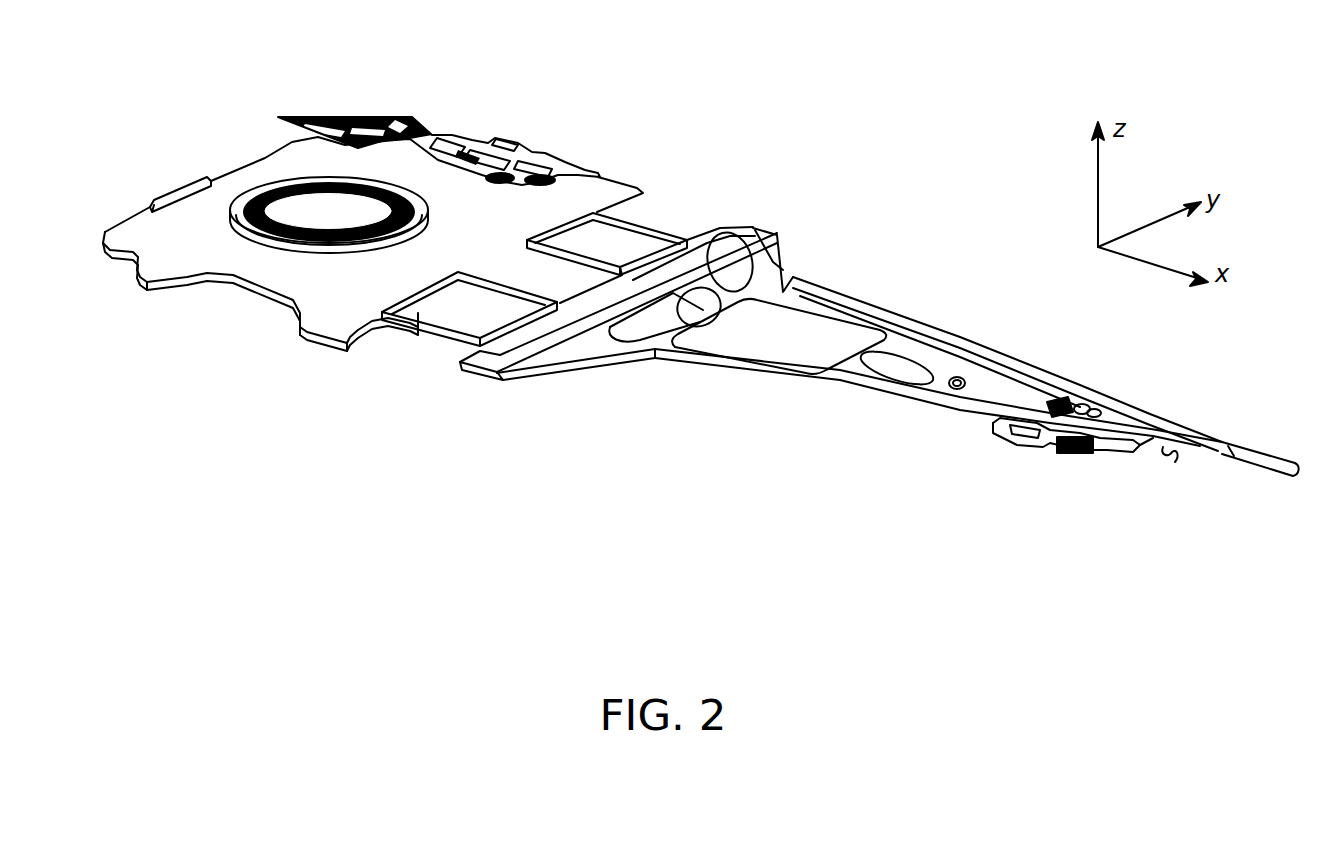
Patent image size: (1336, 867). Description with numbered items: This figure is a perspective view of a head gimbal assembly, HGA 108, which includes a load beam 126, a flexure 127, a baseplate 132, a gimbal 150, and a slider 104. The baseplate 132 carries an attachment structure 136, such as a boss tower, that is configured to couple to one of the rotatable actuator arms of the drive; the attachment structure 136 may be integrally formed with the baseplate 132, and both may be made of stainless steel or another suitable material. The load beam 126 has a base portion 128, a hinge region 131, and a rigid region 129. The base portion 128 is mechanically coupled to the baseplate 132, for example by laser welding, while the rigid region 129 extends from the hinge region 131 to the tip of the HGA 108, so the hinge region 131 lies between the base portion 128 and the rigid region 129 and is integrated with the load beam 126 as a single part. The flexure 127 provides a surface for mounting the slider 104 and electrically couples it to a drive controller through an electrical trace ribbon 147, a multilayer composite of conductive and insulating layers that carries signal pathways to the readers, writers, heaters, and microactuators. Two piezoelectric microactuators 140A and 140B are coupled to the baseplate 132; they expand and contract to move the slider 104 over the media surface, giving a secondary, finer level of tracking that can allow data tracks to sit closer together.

The slider 104 is at (1083, 450).
The HGA 108 is at (857, 148).
The load beam 126 is at (922, 305).
The flexure 127 is at (1043, 463).
The base portion 128 is at (593, 348).
The rigid region 129 is at (1008, 387).
The hinge region 131 is at (785, 285).
The baseplate 132 is at (610, 186).
The attachment structure 136 is at (266, 186).
The microactuator 140A is at (448, 315).
The microactuator 140B is at (655, 215).
The electrical trace ribbon 147 is at (432, 130).
The gimbal 150 is at (1170, 447).